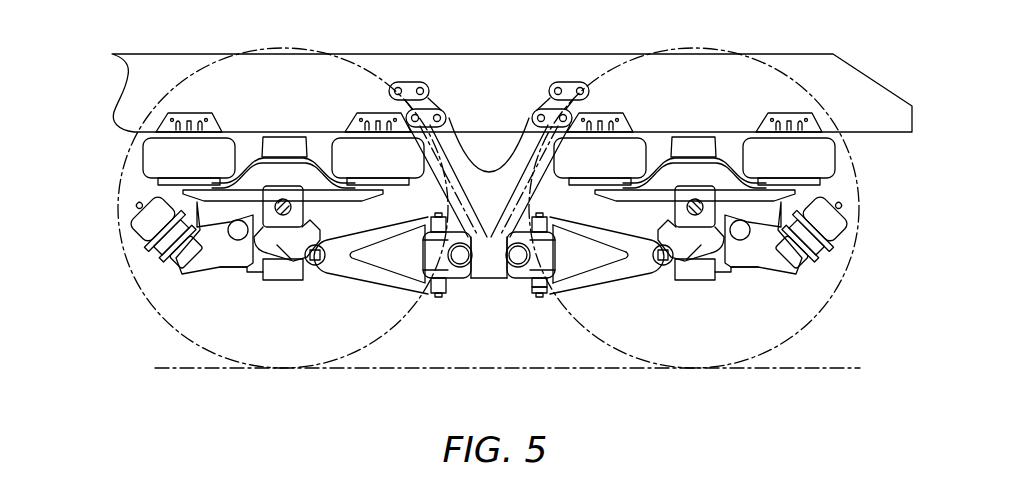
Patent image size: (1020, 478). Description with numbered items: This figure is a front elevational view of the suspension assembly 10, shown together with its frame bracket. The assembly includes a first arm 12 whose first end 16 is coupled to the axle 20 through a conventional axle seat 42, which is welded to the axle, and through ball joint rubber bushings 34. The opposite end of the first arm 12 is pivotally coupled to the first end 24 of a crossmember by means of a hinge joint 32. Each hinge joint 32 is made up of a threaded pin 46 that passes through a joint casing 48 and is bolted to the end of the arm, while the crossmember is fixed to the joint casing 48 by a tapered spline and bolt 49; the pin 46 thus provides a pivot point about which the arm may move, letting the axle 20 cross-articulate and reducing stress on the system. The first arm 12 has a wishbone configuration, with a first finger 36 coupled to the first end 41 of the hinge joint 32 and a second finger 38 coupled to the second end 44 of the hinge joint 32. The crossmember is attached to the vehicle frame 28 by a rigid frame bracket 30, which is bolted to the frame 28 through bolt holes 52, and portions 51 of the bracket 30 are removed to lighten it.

The suspension assembly 10 is at (620, 364).
The first arm 12 is at (636, 270).
The first end 16 is at (680, 272).
The axle 20 is at (705, 268).
The first end of crossmember 24 is at (502, 278).
The vehicle frame 28 is at (823, 80).
The frame bracket 30 is at (462, 157).
The hinge joint 32 is at (517, 227).
The ball joint rubber bushing 34 is at (665, 267).
The first finger 36 is at (556, 292).
The second finger 38 is at (620, 238).
The first end of hinge joint 41 is at (538, 304).
The axle seat 42 is at (743, 241).
The second end of hinge joint 44 is at (549, 203).
The threaded pin 46 is at (553, 282).
The joint casing 48 is at (553, 240).
The bolt 49 is at (500, 254).
The removed portions of bracket 51 is at (534, 120).
The bolt holes 52 is at (553, 89).